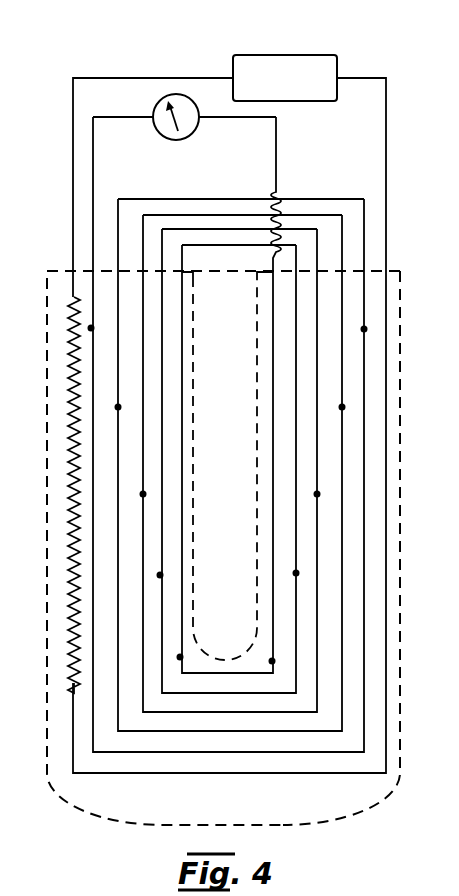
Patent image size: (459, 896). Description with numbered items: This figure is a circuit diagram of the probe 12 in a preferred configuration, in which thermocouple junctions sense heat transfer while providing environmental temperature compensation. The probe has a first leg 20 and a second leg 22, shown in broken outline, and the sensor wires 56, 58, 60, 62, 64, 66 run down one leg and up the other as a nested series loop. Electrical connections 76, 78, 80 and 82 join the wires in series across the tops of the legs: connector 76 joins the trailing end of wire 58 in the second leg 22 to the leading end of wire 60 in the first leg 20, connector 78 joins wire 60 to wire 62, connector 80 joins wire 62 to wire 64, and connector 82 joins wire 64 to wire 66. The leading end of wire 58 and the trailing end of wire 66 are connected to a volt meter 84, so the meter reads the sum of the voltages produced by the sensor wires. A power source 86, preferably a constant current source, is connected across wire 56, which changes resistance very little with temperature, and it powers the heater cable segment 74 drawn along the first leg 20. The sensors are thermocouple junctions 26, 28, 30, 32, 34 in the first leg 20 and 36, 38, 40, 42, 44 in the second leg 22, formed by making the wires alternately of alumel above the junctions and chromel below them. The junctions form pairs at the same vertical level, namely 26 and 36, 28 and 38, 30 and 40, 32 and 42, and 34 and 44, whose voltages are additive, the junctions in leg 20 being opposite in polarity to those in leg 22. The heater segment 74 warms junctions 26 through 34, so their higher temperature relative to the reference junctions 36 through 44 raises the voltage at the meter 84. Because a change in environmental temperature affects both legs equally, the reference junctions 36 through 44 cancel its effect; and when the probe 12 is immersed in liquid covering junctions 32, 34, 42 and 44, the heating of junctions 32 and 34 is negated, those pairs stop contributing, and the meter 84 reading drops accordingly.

The probe 12 is at (401, 203).
The first leg 20 is at (46, 271).
The second leg 22 is at (402, 270).
The thermocouple junction 26 is at (91, 328).
The thermocouple junction 28 is at (118, 407).
The thermocouple junction 30 is at (143, 494).
The thermocouple junction 32 is at (160, 575).
The thermocouple junction 34 is at (180, 657).
The reference thermocouple junction 36 is at (364, 329).
The reference thermocouple junction 38 is at (342, 407).
The reference thermocouple junction 40 is at (317, 494).
The reference thermocouple junction 42 is at (296, 573).
The reference thermocouple junction 44 is at (272, 661).
The wire 56 is at (386, 295).
The sensor wire 58 is at (364, 313).
The sensor wire 60 is at (342, 338).
The sensor wire 62 is at (317, 367).
The sensor wire 64 is at (296, 394).
The sensor wire 66 is at (273, 418).
The heater cable segment 74 is at (68, 365).
The electrical connection 76 is at (143, 199).
The electrical connection 78 is at (182, 215).
The electrical connection 80 is at (200, 229).
The electrical connection 82 is at (228, 245).
The volt meter 84 is at (156, 105).
The power source 86 is at (298, 55).